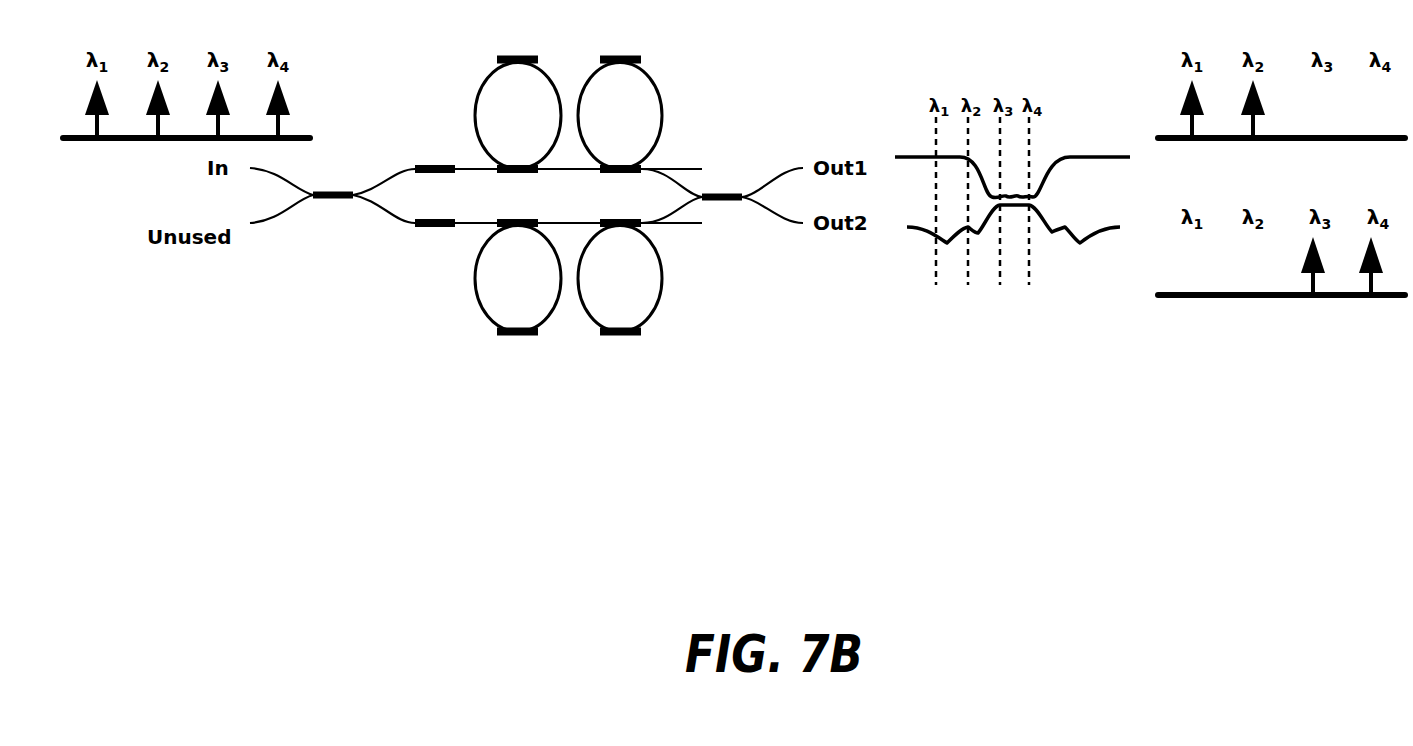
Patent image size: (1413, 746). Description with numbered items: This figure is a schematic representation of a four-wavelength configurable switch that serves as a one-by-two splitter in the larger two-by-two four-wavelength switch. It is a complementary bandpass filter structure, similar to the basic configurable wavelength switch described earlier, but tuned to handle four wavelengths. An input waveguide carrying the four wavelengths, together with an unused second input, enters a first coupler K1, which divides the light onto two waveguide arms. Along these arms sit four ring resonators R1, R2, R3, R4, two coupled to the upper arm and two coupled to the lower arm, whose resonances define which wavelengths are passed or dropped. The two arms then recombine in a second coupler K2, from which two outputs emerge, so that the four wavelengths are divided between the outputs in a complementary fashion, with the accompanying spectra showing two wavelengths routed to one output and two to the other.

The first directional coupler K1 is at (333, 175).
The second directional coupler K2 is at (722, 176).
The first ring resonator R1 is at (518, 115).
The second ring resonator R2 is at (620, 115).
The third ring resonator R3 is at (518, 277).
The fourth ring resonator R4 is at (620, 277).